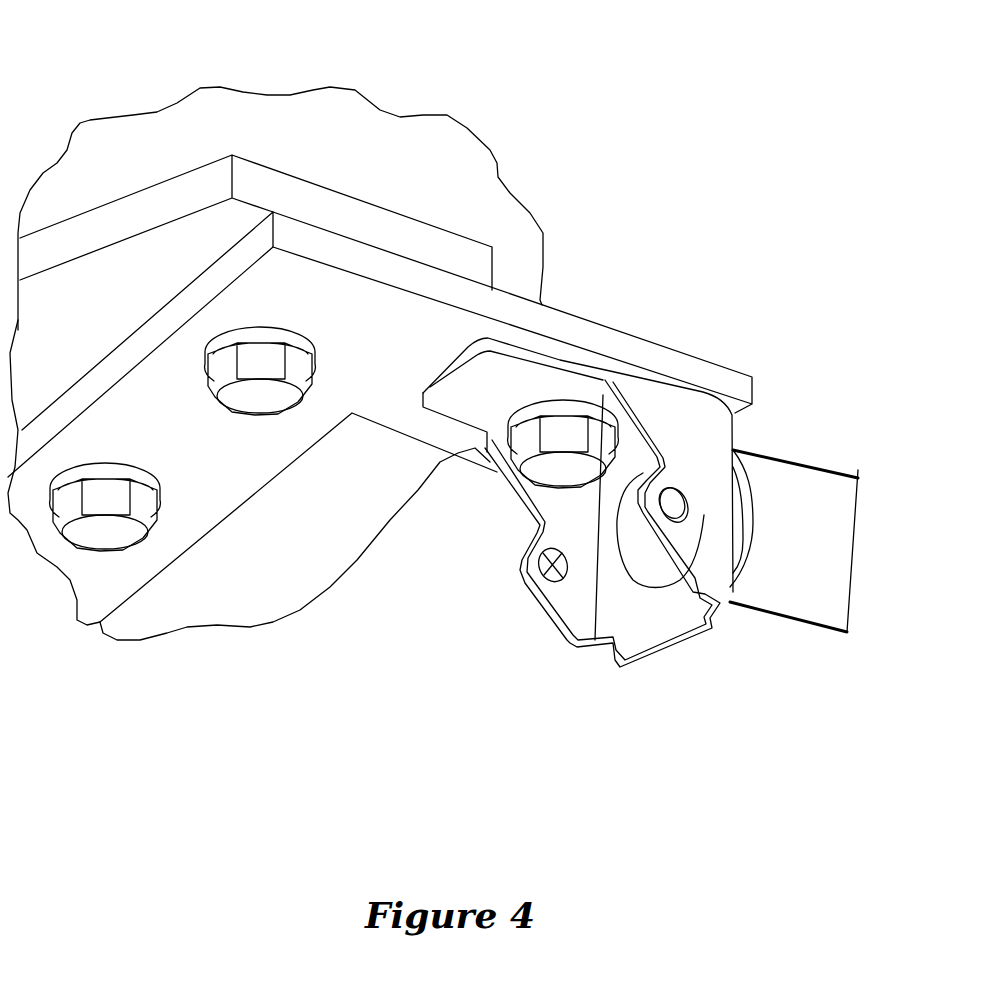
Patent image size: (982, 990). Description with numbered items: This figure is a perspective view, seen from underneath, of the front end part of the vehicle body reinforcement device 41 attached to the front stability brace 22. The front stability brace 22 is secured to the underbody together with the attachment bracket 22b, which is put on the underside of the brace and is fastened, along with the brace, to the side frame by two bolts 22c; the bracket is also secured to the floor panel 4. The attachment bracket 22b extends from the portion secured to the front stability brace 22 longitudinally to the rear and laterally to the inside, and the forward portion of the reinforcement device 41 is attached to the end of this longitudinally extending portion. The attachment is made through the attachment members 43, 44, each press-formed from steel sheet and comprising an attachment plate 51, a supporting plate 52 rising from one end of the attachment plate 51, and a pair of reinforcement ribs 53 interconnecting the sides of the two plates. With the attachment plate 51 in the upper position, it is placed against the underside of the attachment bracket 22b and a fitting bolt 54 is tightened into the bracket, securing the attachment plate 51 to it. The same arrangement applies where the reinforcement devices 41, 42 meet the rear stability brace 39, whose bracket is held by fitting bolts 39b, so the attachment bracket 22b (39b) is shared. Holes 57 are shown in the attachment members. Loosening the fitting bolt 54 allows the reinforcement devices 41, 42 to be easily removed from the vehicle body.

The front stability brace 22 is at (275, 334).
The rear stability brace 39 is at (85, 300).
The floor panel 4 is at (443, 165).
The attachment bracket 22b is at (512, 284).
The fitting bolt 39b is at (587, 330).
The bolt 22c is at (260, 390).
The attachment plate 51 is at (470, 408).
The supporting plate 52 is at (648, 630).
The reinforcement rib 53 is at (710, 553).
The fitting bolt 54 is at (560, 472).
The hole 57 is at (690, 500).
The attachment member 43 is at (801, 446).
The attachment member 44 is at (733, 423).
The vehicle body reinforcement device 41 is at (802, 499).
The reinforcement device 42 is at (797, 505).